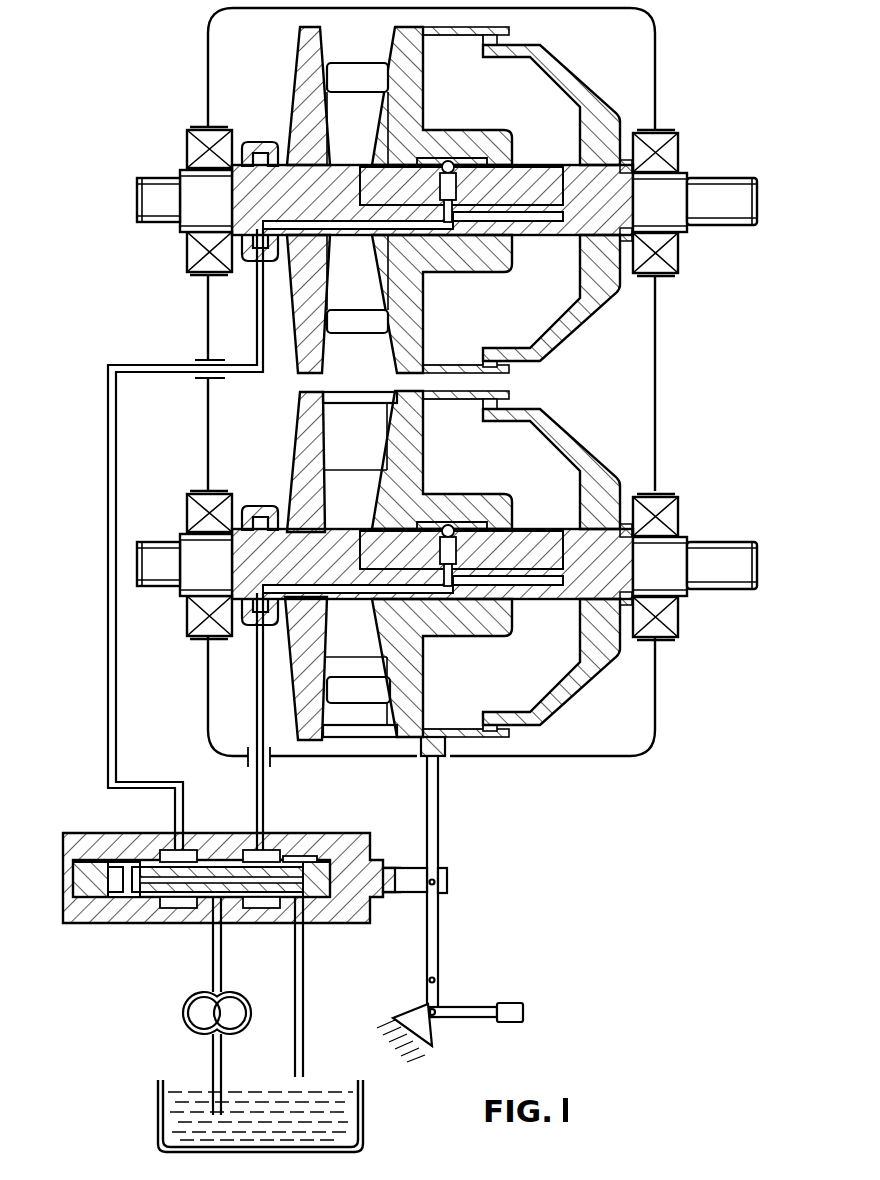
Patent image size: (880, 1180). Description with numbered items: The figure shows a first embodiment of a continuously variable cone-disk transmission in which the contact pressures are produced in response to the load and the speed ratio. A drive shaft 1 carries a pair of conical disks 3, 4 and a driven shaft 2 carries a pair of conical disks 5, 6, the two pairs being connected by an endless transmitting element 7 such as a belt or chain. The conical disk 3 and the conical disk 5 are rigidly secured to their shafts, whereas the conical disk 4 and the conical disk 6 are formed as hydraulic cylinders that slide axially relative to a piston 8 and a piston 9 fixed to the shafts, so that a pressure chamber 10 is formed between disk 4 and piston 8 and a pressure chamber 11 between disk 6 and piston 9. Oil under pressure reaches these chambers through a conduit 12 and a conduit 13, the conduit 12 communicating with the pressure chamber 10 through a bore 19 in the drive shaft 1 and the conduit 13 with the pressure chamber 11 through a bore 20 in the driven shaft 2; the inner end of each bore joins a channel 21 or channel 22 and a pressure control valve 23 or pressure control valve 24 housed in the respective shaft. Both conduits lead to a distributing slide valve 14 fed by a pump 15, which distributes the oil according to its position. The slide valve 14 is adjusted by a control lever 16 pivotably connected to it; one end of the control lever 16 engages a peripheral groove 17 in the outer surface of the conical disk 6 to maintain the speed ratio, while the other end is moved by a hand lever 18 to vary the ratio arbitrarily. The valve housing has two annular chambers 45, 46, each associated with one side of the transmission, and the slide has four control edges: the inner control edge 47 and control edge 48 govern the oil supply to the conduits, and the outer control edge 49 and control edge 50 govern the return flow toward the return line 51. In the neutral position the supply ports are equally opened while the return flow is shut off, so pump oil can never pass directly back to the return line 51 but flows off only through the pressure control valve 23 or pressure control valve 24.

The drive shaft 1 is at (713, 195).
The driven shaft 2 is at (713, 556).
The conical disk 3 is at (307, 77).
The conical disk 4 is at (402, 50).
The conical disk 5 is at (300, 433).
The conical disk 6 is at (400, 442).
The endless transmitting element 7 is at (348, 312).
The piston 8 is at (597, 128).
The piston 9 is at (607, 480).
The pressure chamber 10 is at (543, 103).
The pressure chamber 11 is at (540, 660).
The conduit 12 is at (110, 650).
The conduit 13 is at (257, 686).
The distributing slide valve 14 is at (92, 880).
The pump 15 is at (185, 1022).
The control lever 16 is at (438, 928).
The peripheral groove 17 is at (436, 754).
The hand lever 18 is at (505, 1003).
The bore 19 is at (290, 205).
The bore 20 is at (290, 570).
The channel 21 is at (360, 185).
The channel 22 is at (360, 548).
The pressure control valve 23 is at (440, 181).
The pressure control valve 24 is at (434, 548).
The annular chamber 45 is at (185, 908).
The annular chamber 46 is at (250, 910).
The control edge 47 is at (195, 848).
The control edge 48 is at (245, 850).
The control edge 49 is at (118, 858).
The control edge 50 is at (290, 855).
The return line 51 is at (303, 1060).